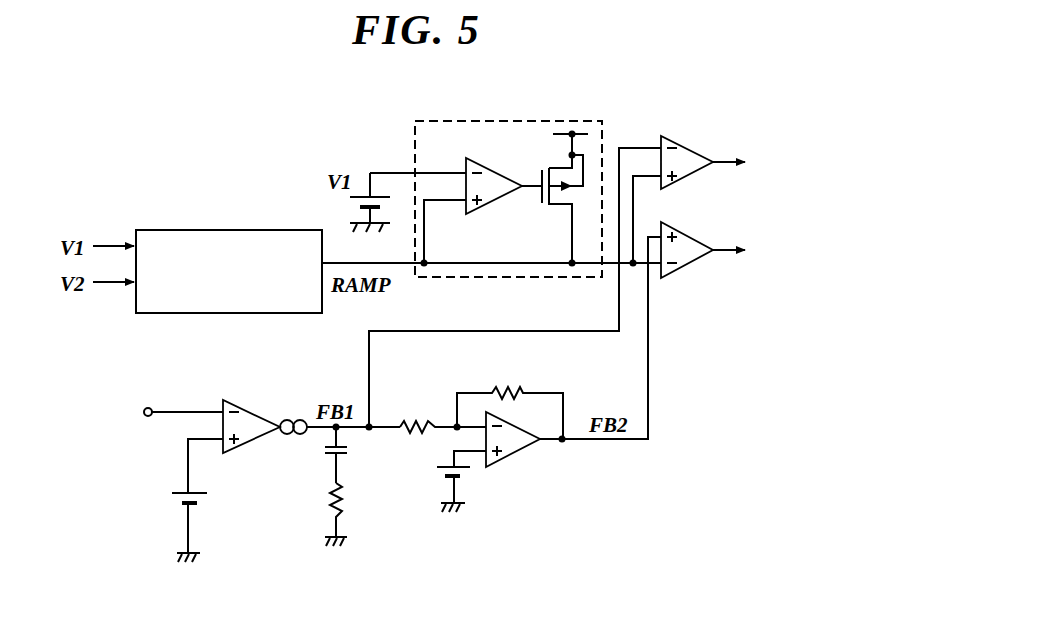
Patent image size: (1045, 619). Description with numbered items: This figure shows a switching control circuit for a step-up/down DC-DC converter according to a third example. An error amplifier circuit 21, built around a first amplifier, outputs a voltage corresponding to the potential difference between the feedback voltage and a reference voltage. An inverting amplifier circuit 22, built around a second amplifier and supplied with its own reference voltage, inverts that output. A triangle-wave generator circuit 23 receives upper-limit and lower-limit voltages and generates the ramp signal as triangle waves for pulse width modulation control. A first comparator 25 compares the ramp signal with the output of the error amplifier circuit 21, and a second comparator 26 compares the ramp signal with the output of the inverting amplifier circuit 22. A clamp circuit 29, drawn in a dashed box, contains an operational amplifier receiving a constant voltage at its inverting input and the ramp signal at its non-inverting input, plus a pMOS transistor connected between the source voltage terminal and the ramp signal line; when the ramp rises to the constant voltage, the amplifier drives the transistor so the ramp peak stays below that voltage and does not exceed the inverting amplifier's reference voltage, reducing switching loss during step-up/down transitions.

The clamp circuit 29 is at (455, 121).
The waveform generator circuit 23 is at (222, 230).
The first comparator 25 is at (704, 170).
The second comparator 26 is at (700, 262).
The error amplifier circuit 21 is at (246, 462).
The inverting amplifier circuit 22 is at (514, 488).